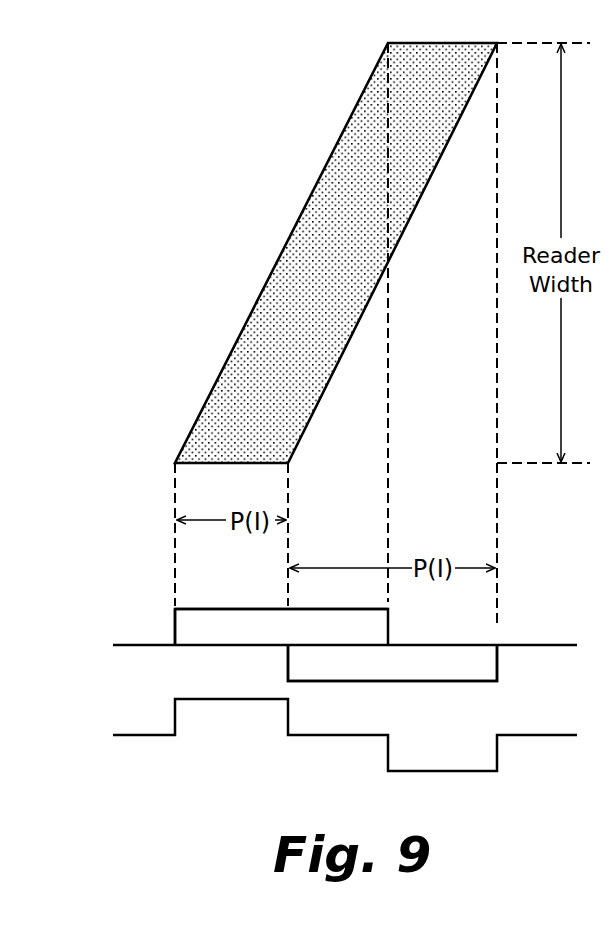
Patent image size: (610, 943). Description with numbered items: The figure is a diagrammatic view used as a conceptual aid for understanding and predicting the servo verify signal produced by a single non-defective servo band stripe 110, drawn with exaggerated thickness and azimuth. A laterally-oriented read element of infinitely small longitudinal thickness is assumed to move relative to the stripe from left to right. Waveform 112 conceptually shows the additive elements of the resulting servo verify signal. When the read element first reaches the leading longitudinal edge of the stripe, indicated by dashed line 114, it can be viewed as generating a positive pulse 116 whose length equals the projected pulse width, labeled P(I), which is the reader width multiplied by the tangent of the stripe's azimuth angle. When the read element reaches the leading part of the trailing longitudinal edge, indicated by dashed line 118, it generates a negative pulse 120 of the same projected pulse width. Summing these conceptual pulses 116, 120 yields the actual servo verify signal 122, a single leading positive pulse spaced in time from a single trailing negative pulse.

The servo band stripe 110 is at (343, 143).
The waveform 112 is at (148, 645).
The dashed line 114 is at (175, 485).
The positive pulse 116 is at (175, 609).
The dashed line 118 is at (266, 593).
The negative pulse 120 is at (497, 660).
The servo verify signal 122 is at (148, 735).